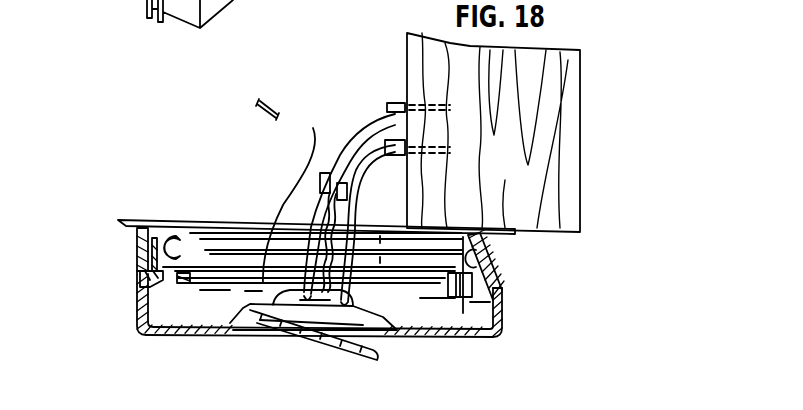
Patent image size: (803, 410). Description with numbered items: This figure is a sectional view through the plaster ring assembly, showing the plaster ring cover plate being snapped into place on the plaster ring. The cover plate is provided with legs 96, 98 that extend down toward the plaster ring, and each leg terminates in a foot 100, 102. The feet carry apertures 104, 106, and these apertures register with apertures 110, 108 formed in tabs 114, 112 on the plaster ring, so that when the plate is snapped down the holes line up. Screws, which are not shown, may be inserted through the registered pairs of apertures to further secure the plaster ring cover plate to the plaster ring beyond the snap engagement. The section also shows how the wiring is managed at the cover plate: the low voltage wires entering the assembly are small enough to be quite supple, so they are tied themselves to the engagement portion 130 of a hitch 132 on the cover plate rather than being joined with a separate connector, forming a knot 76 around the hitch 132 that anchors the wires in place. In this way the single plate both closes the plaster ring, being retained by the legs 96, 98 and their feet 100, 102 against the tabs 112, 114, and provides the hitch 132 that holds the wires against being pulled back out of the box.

The cables 76 is at (310, 205).
The leg 96 is at (137, 293).
The leg 98 is at (503, 307).
The foot 100 is at (147, 268).
The foot 102 is at (502, 272).
The aperture 104 is at (464, 270).
The aperture 106 is at (190, 250).
The aperture 108 is at (480, 262).
The aperture 110 is at (188, 255).
The tab 112 is at (465, 262).
The tab 114 is at (195, 248).
The engagement portion 130 is at (280, 105).
The hitch 132 is at (265, 330).